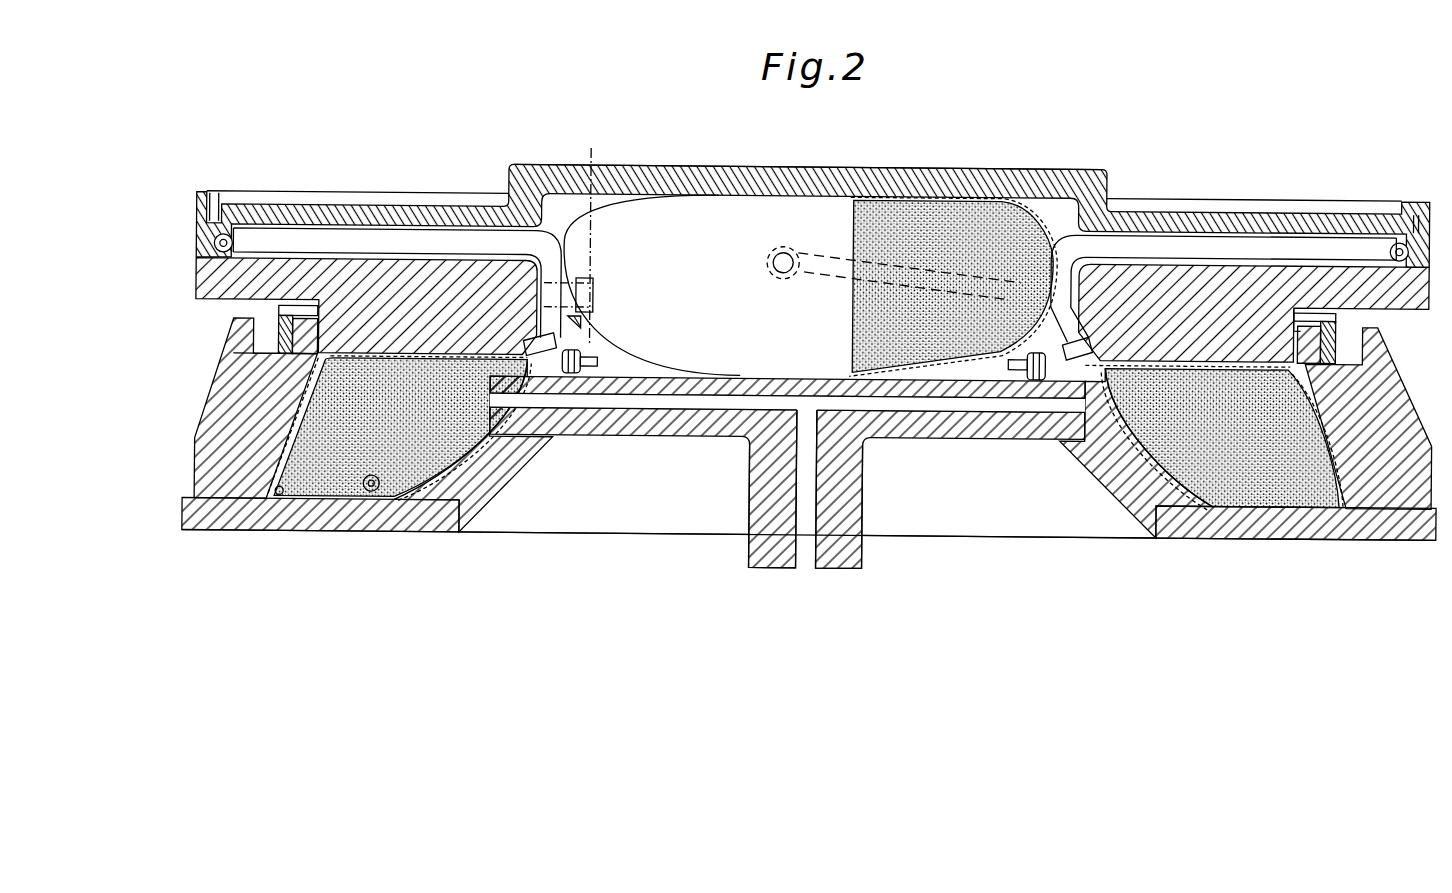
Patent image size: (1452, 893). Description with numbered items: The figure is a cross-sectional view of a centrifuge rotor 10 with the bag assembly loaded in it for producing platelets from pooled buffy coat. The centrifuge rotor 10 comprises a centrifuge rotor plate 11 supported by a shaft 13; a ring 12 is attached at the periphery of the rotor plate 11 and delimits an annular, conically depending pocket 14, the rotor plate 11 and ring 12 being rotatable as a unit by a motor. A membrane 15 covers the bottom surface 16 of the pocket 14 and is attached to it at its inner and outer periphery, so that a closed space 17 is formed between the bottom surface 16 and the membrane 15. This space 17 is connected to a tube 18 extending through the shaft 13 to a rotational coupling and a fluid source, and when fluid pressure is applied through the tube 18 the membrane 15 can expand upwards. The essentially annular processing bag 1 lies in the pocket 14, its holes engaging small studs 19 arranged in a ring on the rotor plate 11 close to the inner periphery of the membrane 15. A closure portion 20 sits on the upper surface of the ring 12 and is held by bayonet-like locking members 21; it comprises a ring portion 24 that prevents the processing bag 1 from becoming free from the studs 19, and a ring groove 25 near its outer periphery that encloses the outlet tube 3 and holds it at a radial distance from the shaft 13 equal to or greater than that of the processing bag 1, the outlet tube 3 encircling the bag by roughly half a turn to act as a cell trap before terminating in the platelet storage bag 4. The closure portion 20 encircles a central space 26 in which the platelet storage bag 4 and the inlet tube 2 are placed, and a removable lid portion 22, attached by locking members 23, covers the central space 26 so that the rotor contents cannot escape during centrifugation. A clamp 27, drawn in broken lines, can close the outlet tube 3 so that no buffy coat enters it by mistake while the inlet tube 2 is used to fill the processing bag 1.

The processing bag 1 is at (307, 469).
The inlet tube 2 is at (824, 262).
The outlet tube 3 is at (362, 247).
The platelet storage bag 4 is at (690, 216).
The centrifuge rotor 10 is at (1138, 580).
The centrifuge rotor plate 11 is at (203, 526).
The ring 12 is at (198, 428).
The shaft 13 is at (852, 557).
The pocket 14 is at (243, 364).
The membrane 15 is at (430, 495).
The bottom surface 16 is at (366, 525).
The space 17 is at (287, 508).
The tube 18 is at (800, 477).
The studs 19 is at (578, 350).
The closure portion 20 is at (185, 280).
The locking members 21 is at (253, 313).
The lid portion 22 is at (528, 156).
The locking members 23 is at (206, 196).
The ring portion 24 is at (590, 318).
The ring groove 25 is at (212, 249).
The central space 26 is at (1042, 213).
The clamp 27 is at (588, 166).